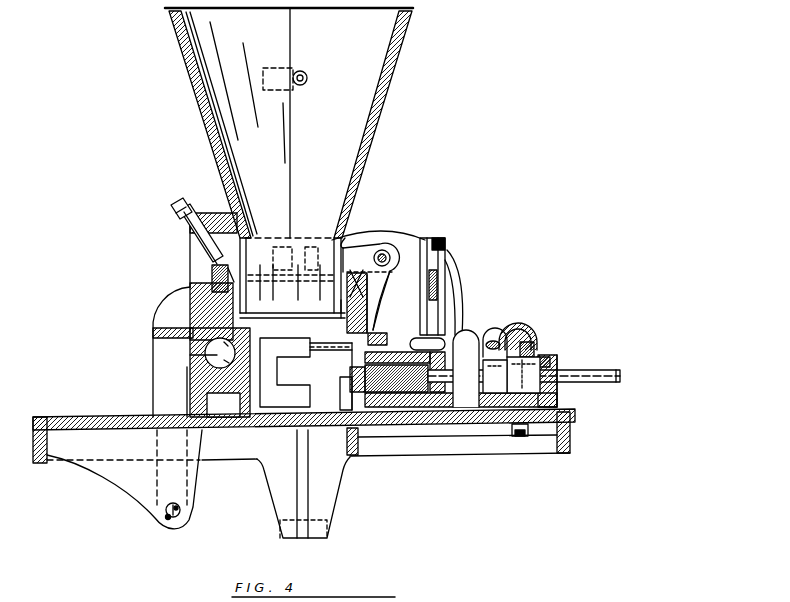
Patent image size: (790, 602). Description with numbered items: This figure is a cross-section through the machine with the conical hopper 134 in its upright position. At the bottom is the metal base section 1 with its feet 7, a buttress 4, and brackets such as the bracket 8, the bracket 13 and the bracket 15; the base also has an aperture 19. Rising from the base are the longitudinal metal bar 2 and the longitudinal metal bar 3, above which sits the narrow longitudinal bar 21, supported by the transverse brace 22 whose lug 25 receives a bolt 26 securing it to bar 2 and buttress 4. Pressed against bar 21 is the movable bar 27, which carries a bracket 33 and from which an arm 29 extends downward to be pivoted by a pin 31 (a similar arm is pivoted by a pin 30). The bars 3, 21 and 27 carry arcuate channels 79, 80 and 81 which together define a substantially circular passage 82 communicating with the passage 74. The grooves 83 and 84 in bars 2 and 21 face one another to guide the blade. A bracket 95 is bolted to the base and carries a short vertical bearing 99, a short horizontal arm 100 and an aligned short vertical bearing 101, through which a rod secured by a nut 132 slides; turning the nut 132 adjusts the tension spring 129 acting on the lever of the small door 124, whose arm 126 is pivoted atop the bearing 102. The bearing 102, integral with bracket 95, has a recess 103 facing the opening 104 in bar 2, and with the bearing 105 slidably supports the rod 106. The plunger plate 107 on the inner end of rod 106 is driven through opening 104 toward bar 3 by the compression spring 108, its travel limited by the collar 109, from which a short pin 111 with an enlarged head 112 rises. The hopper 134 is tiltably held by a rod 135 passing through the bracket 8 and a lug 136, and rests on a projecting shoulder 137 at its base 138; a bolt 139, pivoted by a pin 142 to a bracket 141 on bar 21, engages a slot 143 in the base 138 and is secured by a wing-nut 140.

The metal base section 1 is at (103, 418).
The longitudinal metal bar 2 is at (362, 330).
The longitudinal metal bar 3 is at (195, 356).
The buttress 4 is at (460, 292).
The feet 7 is at (325, 497).
The bracket 8 is at (380, 300).
The bracket 13 is at (182, 507).
The bracket 15 is at (194, 478).
The aperture 19 is at (447, 420).
The narrow longitudinal bar 21 is at (215, 308).
The transverse brace 22 is at (385, 242).
The lug 25 is at (448, 262).
The bolt 26 is at (442, 244).
The movable bar 27 is at (195, 294).
The arm 29 is at (158, 382).
The pin 30 is at (166, 512).
The pin 31 is at (180, 516).
The bracket 33 is at (212, 279).
The passage 74 is at (223, 405).
The arcuate channel 79 is at (230, 359).
The arcuate channel 80 is at (220, 353).
The arcuate channel 81 is at (230, 345).
The passage 82 is at (200, 388).
The longitudinal groove 83 is at (350, 328).
The longitudinal groove 84 is at (232, 317).
The bracket 95 is at (557, 398).
The short vertical bearing 99 is at (470, 330).
The short horizontal arm 100 is at (478, 360).
The short vertical bearing 101 is at (492, 330).
The bearing 102 is at (388, 345).
The recess 103 is at (410, 395).
The opening 104 is at (352, 348).
The bearing 105 is at (556, 357).
The rod 106 is at (598, 372).
The plunger plate 107 is at (345, 390).
The compression spring 108 is at (392, 395).
The collar 109 is at (507, 410).
The short pin 111 is at (540, 349).
The enlarged head 112 is at (531, 342).
The door 124 is at (283, 343).
The arm 126 is at (380, 336).
The tension spring 129 is at (428, 340).
The nut 132 is at (518, 324).
The conical hopper 134 is at (380, 112).
The rod 135 is at (390, 252).
The lug 136 is at (353, 253).
The projecting shoulder 137 is at (343, 236).
The base of the hopper 138 is at (205, 258).
The bolt 139 is at (246, 230).
The wing-nut 140 is at (178, 212).
The bracket 141 is at (238, 277).
The pin 142 is at (212, 270).
The slot 143 is at (186, 225).